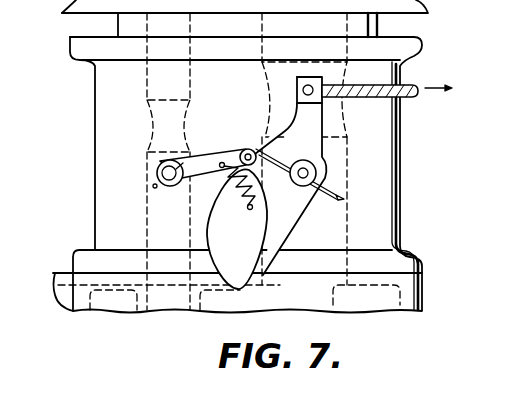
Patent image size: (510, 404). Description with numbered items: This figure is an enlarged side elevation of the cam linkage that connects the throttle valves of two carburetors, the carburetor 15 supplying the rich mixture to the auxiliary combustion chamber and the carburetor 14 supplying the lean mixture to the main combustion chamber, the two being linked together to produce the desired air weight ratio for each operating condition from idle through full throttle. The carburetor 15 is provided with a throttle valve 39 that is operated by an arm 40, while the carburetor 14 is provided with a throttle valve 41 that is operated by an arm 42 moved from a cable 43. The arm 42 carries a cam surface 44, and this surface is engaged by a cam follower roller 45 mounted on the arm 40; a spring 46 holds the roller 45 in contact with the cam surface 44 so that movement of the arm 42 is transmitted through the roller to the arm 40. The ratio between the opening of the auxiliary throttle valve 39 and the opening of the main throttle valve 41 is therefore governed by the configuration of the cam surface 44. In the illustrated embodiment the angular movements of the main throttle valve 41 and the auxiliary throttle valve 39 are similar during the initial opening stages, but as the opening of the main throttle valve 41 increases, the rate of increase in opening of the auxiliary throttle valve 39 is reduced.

The carburetor 14 is at (350, 222).
The carburetor 15 is at (147, 212).
The throttle valve 39 is at (153, 188).
The arm 40 is at (205, 158).
The throttle valve 41 is at (332, 187).
The arm 42 is at (312, 117).
The cable 43 is at (412, 98).
The cam surface 44 is at (212, 192).
The cam follower roller 45 is at (250, 149).
The spring 46 is at (235, 206).